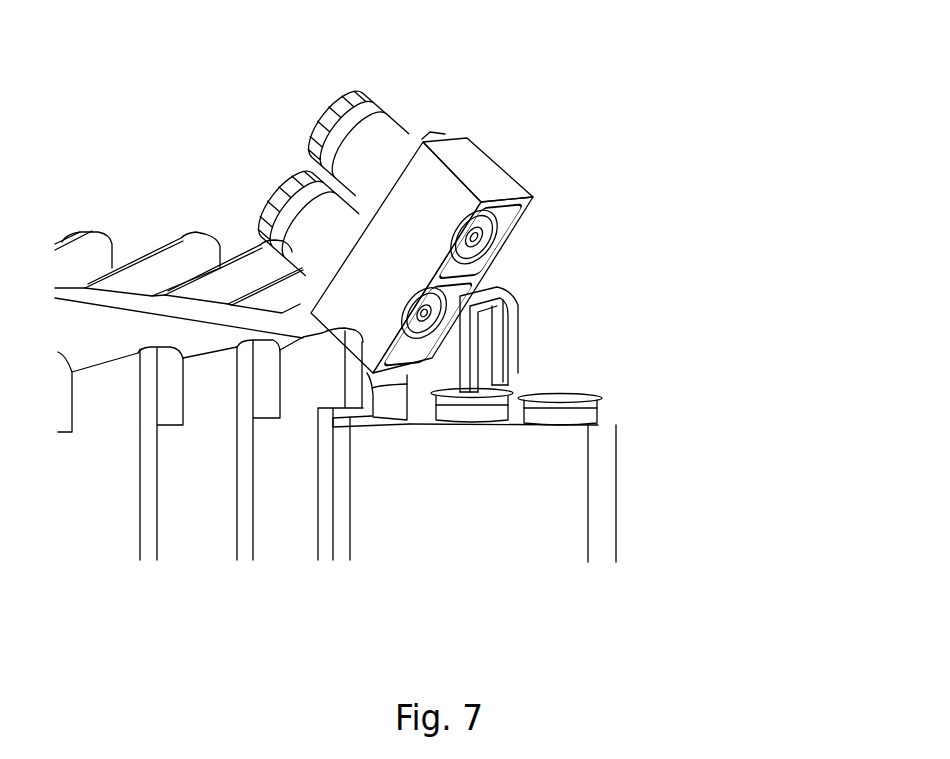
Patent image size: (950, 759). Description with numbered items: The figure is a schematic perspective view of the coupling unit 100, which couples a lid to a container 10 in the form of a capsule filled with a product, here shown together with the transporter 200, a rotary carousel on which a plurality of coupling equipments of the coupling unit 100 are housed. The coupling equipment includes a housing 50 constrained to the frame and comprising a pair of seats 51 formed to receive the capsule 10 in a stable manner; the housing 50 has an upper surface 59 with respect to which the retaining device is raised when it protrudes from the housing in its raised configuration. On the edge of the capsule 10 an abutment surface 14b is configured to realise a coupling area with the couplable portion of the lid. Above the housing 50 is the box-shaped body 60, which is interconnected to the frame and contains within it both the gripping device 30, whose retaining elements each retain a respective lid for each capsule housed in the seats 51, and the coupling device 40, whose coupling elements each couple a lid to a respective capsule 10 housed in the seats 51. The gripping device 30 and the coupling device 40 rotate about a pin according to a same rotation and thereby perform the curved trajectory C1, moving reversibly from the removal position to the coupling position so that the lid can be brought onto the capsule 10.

The coupling unit 100 is at (550, 328).
The transporter 200 is at (153, 258).
The box-shaped body 60 is at (499, 203).
The gripping device 30 is at (494, 221).
The coupling device 40 is at (489, 238).
The upper surface 59 is at (403, 418).
The container 10 is at (624, 490).
The abutment surface 14b is at (600, 393).
The seat 51 is at (598, 425).
The housing 50 is at (562, 513).
The curved trajectory C1 is at (535, 210).